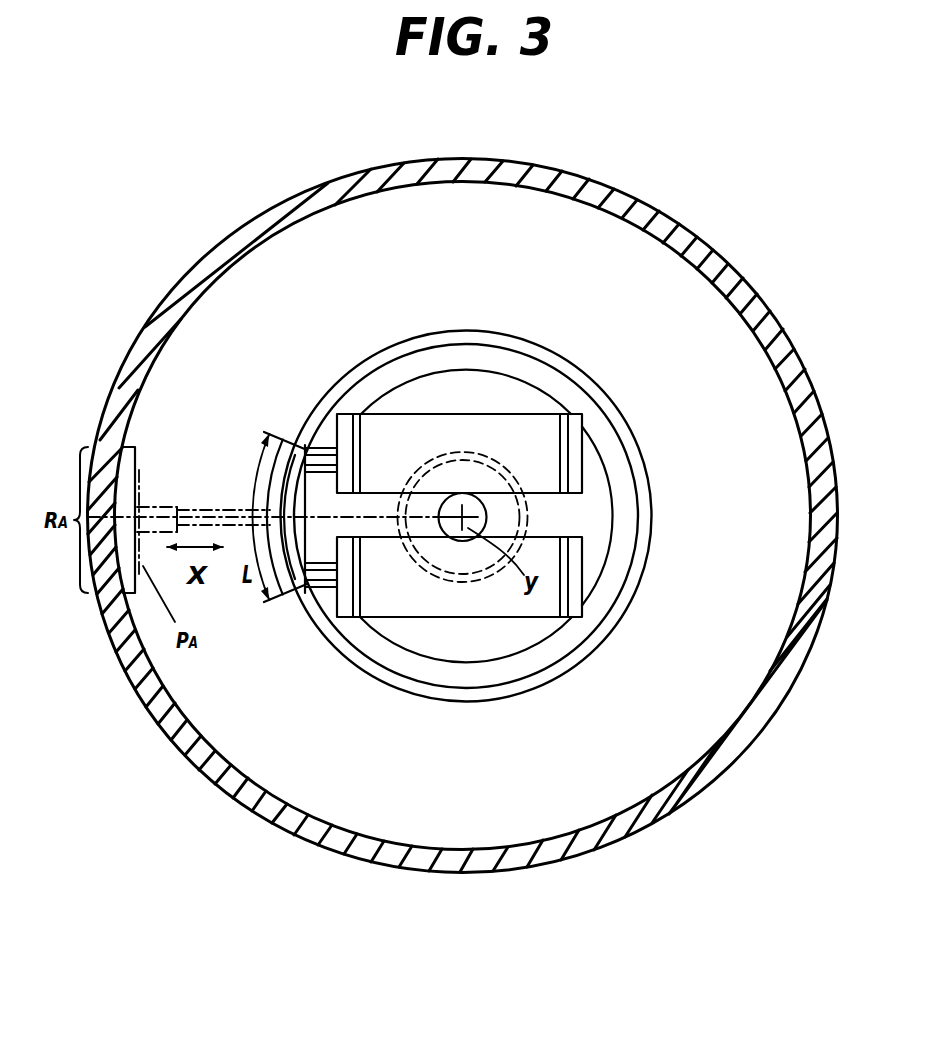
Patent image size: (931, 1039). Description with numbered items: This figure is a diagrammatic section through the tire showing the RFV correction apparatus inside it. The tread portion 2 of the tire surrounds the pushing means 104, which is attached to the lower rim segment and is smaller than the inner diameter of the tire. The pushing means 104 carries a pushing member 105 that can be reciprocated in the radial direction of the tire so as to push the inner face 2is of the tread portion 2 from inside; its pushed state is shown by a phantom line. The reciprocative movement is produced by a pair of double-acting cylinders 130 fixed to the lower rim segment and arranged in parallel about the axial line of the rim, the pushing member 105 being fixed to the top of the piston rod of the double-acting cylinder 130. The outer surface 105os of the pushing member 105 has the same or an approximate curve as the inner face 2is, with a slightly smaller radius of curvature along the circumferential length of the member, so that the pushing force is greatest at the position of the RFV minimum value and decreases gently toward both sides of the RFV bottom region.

The tread portion 2 is at (106, 401).
The inner face of the tread portion 2is is at (137, 456).
The pushing means 104 is at (500, 400).
The pushing member 105 is at (293, 508).
The outer surface of the pushing member 105os is at (268, 463).
The double-acting cylinders 130 is at (397, 427).